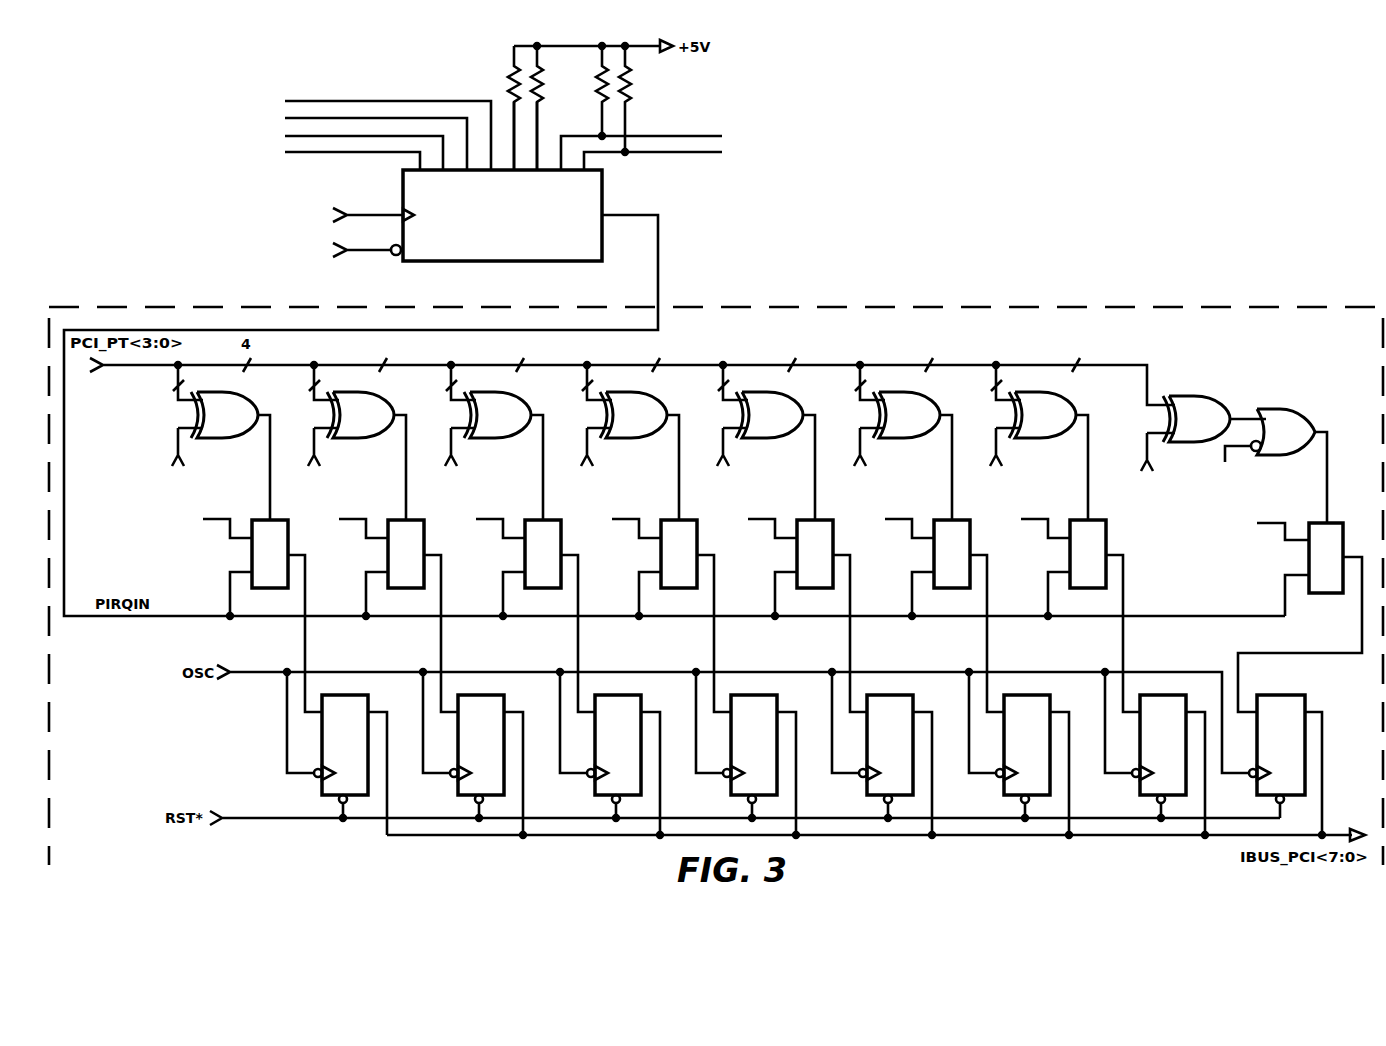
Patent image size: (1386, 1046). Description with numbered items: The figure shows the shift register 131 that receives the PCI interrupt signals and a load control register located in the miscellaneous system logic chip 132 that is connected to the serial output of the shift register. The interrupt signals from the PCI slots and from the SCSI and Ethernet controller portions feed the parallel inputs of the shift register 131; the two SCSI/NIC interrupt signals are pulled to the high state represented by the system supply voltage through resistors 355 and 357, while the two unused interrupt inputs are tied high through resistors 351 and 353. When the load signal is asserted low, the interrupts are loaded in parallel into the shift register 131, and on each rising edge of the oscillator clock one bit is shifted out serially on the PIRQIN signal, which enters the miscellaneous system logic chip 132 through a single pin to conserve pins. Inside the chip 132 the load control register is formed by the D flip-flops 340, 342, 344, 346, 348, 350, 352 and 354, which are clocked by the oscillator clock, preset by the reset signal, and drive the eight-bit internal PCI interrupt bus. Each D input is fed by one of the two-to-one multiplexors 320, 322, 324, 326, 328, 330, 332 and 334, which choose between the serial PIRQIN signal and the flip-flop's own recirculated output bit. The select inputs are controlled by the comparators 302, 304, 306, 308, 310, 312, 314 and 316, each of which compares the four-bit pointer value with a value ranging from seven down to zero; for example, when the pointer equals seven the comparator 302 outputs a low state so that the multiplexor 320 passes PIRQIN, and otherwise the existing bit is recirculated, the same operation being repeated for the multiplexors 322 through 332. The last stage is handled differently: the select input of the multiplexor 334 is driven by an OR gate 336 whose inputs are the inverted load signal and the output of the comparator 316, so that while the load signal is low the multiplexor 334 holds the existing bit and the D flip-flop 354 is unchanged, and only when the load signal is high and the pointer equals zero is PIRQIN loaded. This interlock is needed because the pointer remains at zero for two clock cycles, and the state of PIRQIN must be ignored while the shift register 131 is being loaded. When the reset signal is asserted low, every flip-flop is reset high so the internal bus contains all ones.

The shift register 131 is at (555, 262).
The miscellaneous system logic chip 132 is at (1243, 302).
The comparator 302 is at (213, 440).
The comparator 304 is at (349, 440).
The comparator 306 is at (486, 440).
The comparator 308 is at (622, 440).
The comparator 310 is at (758, 440).
The comparator 312 is at (895, 440).
The comparator 314 is at (1031, 440).
The comparator 316 is at (1193, 396).
The multiplexor 320 is at (289, 547).
The multiplexor 322 is at (425, 547).
The multiplexor 324 is at (562, 547).
The multiplexor 326 is at (698, 547).
The multiplexor 328 is at (834, 547).
The multiplexor 330 is at (971, 547).
The multiplexor 332 is at (1107, 547).
The multiplexor 334 is at (1325, 594).
The OR gate 336 is at (1280, 408).
The D flip-flop 340 is at (350, 695).
The D flip-flop 342 is at (486, 695).
The D flip-flop 344 is at (623, 695).
The D flip-flop 346 is at (759, 695).
The D flip-flop 348 is at (895, 695).
The D flip-flop 350 is at (1032, 695).
The D flip-flop 352 is at (1168, 695).
The D flip-flop 354 is at (1285, 695).
The resistor 351 is at (508, 86).
The resistor 353 is at (542, 86).
The resistor 355 is at (597, 80).
The resistor 357 is at (632, 82).